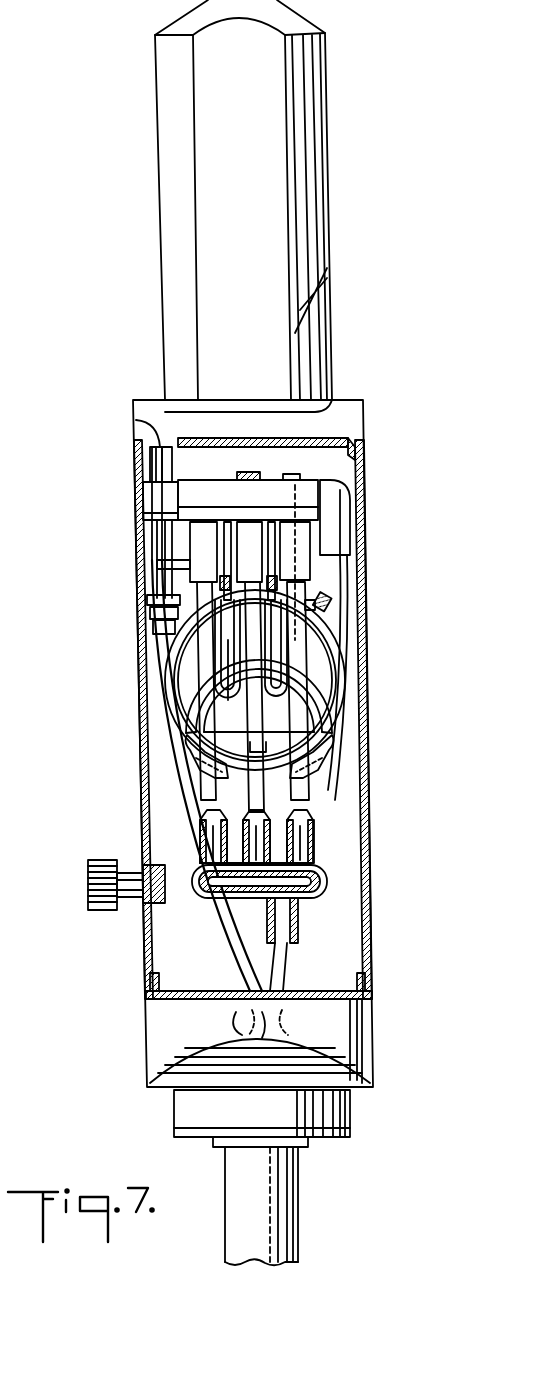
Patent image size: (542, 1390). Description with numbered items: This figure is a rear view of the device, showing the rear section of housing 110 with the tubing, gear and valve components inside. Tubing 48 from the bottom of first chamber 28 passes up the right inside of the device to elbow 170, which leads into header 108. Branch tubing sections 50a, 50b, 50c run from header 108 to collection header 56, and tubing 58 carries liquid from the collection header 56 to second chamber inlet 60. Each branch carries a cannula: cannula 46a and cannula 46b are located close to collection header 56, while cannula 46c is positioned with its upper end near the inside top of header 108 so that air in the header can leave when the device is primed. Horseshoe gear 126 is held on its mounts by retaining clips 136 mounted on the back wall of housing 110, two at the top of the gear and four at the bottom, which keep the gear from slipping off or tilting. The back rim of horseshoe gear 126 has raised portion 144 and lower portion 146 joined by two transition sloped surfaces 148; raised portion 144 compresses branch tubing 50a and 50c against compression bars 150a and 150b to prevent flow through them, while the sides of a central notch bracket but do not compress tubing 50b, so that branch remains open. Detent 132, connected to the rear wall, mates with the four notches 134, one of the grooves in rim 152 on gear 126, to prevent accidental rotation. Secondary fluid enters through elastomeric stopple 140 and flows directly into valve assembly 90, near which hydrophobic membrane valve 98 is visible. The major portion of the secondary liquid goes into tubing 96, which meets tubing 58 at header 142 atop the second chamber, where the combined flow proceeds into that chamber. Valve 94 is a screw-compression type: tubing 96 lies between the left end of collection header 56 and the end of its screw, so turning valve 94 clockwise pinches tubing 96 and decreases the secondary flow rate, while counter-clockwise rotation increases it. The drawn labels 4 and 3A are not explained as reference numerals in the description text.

The first chamber 28 is at (333, 215).
The housing 110 is at (366, 798).
The elastomeric stopple 140 is at (138, 428).
The valve assembly 90 is at (160, 490).
The hydrophobic membrane valve 98 is at (143, 498).
The header 108 is at (218, 490).
The cannula 46c is at (296, 505).
The elbow 170 is at (328, 490).
The retaining clips 136 is at (185, 566).
The tubing 48 is at (343, 565).
The detent 132 is at (322, 600).
The notches 134 is at (152, 632).
The lower portion 146 is at (322, 640).
The horseshoe gear 126 is at (325, 665).
The branch tubing section 50a is at (207, 668).
The branch tubing section 50b is at (245, 725).
The branch tubing section 50c is at (300, 706).
The transition sloped surfaces 148 is at (138, 724).
The raised portion 144 is at (192, 742).
The rim 152 is at (345, 738).
The compression bar 150a is at (186, 762).
The compression bar 150b is at (318, 800).
The tubing 96 is at (170, 785).
The cannula 46a is at (200, 822).
The cannula 46b is at (250, 900).
The collection header 56 is at (306, 900).
The tubing 58 is at (290, 966).
The valve 94 is at (126, 862).
The second chamber inlet 60 is at (300, 1020).
The header 142 is at (236, 1033).
The wire 4 is at (268, 1030).
The pipe 3A is at (303, 1197).